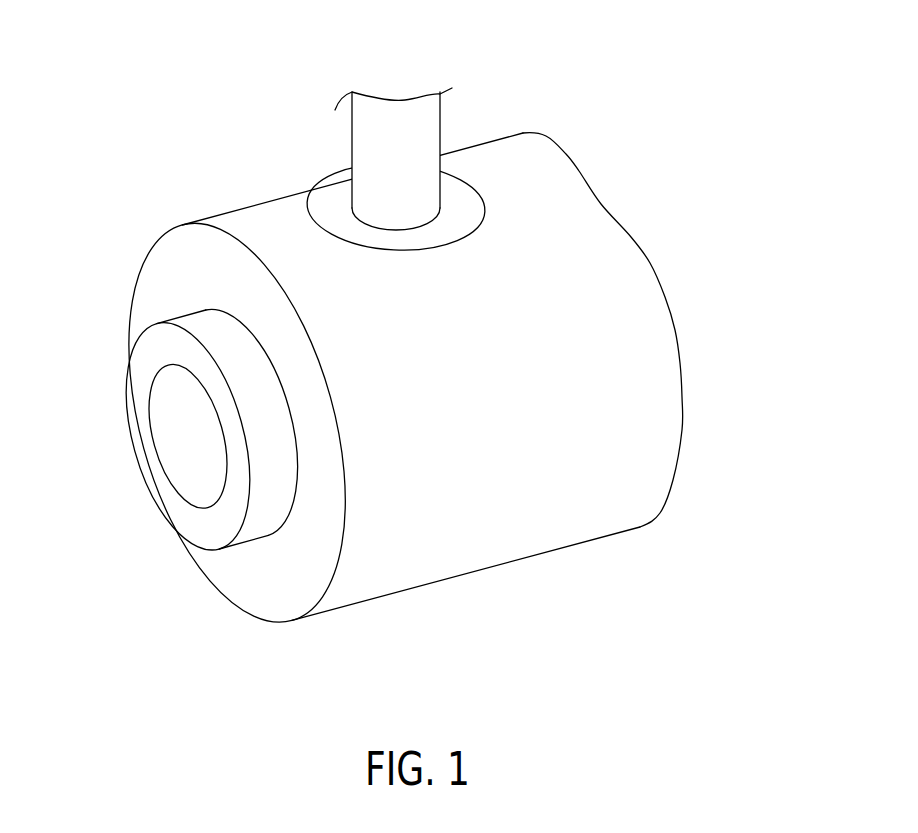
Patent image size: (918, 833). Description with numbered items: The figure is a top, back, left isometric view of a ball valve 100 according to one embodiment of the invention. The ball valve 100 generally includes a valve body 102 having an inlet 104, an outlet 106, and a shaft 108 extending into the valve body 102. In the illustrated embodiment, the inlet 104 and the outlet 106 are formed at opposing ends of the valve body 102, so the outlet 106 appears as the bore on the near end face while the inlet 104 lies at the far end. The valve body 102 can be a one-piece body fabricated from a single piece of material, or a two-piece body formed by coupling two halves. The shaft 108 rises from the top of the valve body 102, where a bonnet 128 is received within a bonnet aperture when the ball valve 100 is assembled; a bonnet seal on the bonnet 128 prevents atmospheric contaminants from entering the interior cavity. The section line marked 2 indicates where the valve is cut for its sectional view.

The ball valve 100 is at (409, 325).
The valve body 102 is at (420, 390).
The inlet 104 is at (678, 332).
The outlet 106 is at (192, 455).
The shaft 108 is at (417, 134).
The bonnet 128 is at (342, 207).
The section line 2- 2 is at (688, 303).